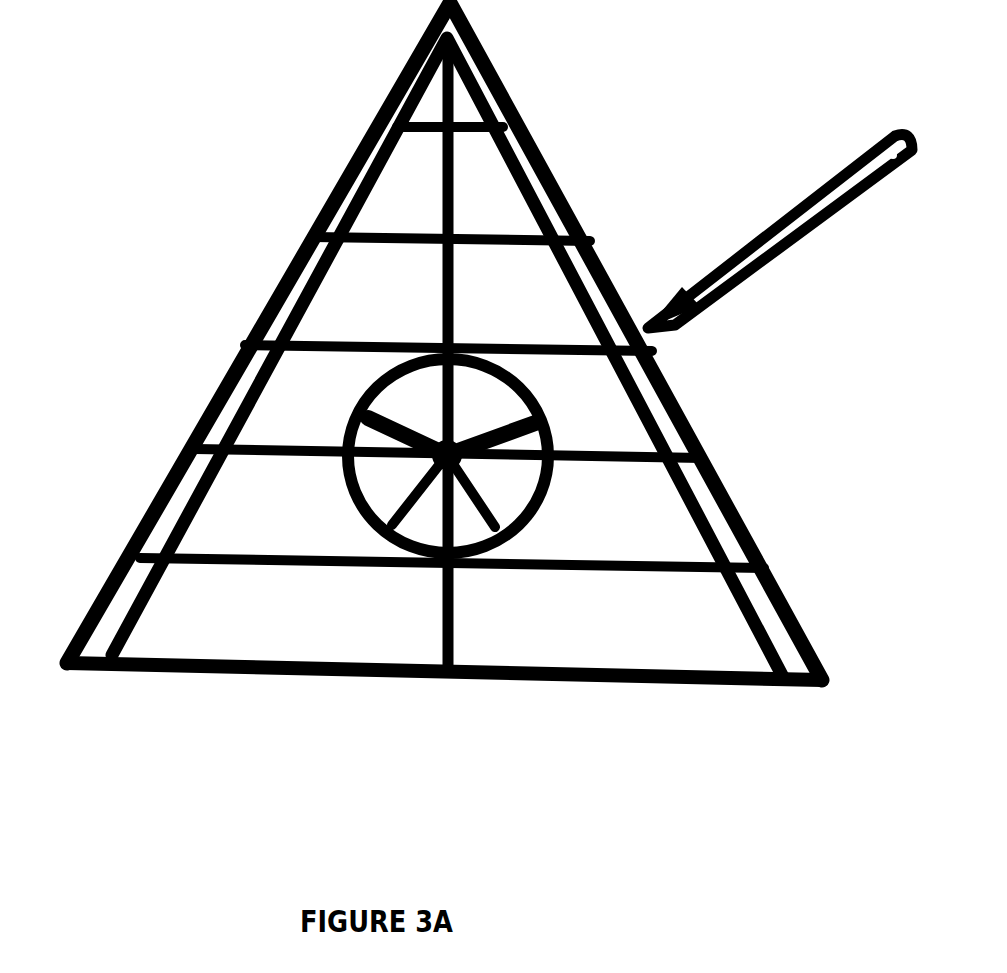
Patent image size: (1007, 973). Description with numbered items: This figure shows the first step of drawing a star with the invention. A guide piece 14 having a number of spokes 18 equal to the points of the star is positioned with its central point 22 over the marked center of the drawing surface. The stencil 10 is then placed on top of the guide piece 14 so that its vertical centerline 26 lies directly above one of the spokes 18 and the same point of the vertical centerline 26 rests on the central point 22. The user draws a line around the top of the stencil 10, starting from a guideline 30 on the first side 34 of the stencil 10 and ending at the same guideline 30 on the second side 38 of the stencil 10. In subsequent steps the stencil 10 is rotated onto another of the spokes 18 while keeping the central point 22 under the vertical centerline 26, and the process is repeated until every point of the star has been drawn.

The stencil 10 is at (680, 685).
The guide piece 14 is at (535, 395).
The spokes 18 is at (437, 412).
The central point 22 is at (432, 457).
The vertical centerline 26 is at (457, 200).
The guideline 30 is at (610, 465).
The first side 34 is at (278, 279).
The second side 38 is at (597, 247).